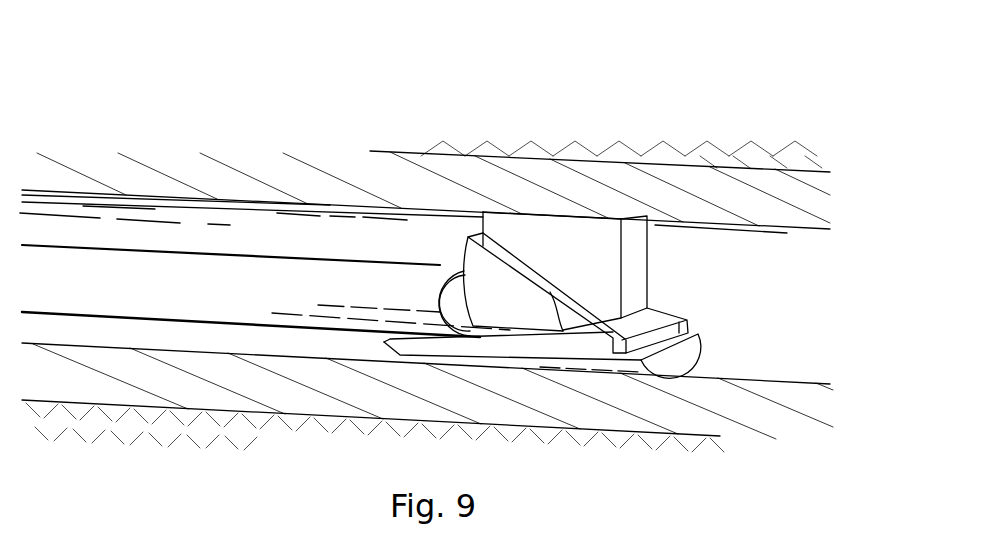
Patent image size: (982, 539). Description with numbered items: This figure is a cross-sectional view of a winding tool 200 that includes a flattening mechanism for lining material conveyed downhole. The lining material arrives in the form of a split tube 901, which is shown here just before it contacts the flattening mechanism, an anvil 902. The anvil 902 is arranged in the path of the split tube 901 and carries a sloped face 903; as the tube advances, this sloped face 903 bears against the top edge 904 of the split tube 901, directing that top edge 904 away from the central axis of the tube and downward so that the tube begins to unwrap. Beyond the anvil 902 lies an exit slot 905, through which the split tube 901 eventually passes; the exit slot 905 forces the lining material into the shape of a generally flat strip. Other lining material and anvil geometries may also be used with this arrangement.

The mounting assembly 200 is at (146, 69).
The split tube 901 is at (194, 212).
The anvil 902 is at (670, 293).
The sloped face 903 is at (537, 313).
The top edge 904 is at (365, 258).
The exit slot 905 is at (654, 345).